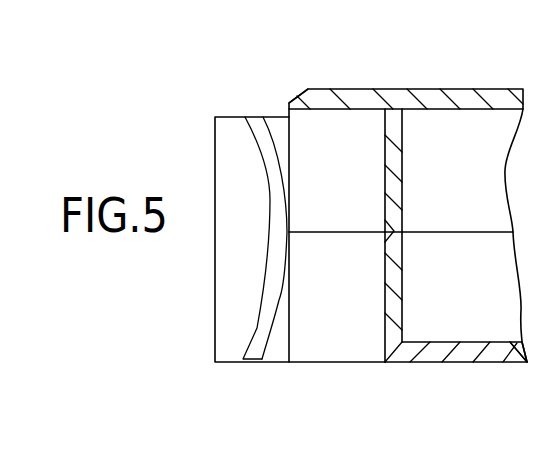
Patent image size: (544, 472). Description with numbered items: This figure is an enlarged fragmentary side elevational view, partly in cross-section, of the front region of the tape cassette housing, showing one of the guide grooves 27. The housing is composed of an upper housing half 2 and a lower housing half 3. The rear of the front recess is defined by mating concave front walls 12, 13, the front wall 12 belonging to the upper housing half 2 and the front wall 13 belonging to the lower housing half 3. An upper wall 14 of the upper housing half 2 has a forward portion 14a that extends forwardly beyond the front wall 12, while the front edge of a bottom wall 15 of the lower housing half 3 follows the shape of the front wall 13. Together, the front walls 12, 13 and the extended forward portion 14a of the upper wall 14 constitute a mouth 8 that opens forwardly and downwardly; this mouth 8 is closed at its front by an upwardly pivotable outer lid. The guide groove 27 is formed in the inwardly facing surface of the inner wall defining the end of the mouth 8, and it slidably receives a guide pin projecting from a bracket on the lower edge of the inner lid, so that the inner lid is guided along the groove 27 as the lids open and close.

The upper housing half 2 is at (420, 88).
The lower housing half 3 is at (445, 362).
The mouth 8 is at (332, 343).
The front wall 12 is at (386, 171).
The front wall 13 is at (385, 310).
The upper wall 14 is at (472, 96).
The forward portion 14a is at (326, 88).
The bottom wall 15 is at (497, 353).
The guide groove 27 is at (263, 259).